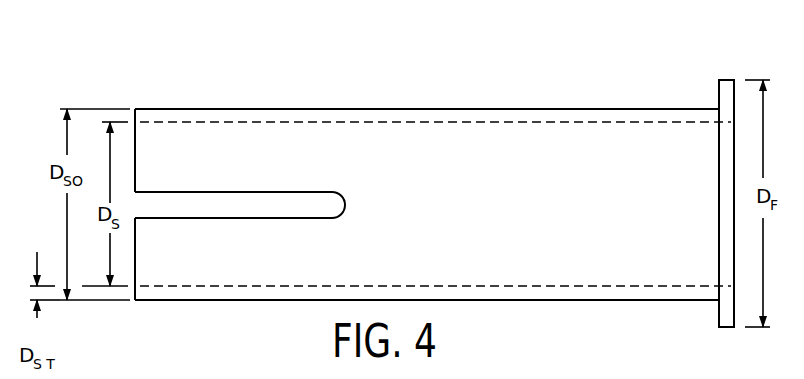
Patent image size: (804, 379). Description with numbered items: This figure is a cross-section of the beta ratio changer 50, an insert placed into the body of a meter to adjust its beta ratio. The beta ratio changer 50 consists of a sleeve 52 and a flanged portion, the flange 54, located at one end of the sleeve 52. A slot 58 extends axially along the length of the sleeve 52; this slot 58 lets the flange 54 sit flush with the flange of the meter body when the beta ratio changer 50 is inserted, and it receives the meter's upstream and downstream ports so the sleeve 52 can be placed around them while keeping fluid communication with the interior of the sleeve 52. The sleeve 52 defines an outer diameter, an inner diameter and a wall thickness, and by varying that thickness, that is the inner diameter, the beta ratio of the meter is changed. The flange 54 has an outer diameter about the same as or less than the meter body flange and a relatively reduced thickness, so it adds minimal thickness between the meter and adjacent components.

The beta ratio changer 50 is at (393, 68).
The sleeve 52 is at (476, 107).
The flange 54 is at (719, 85).
The slot 58 is at (218, 218).